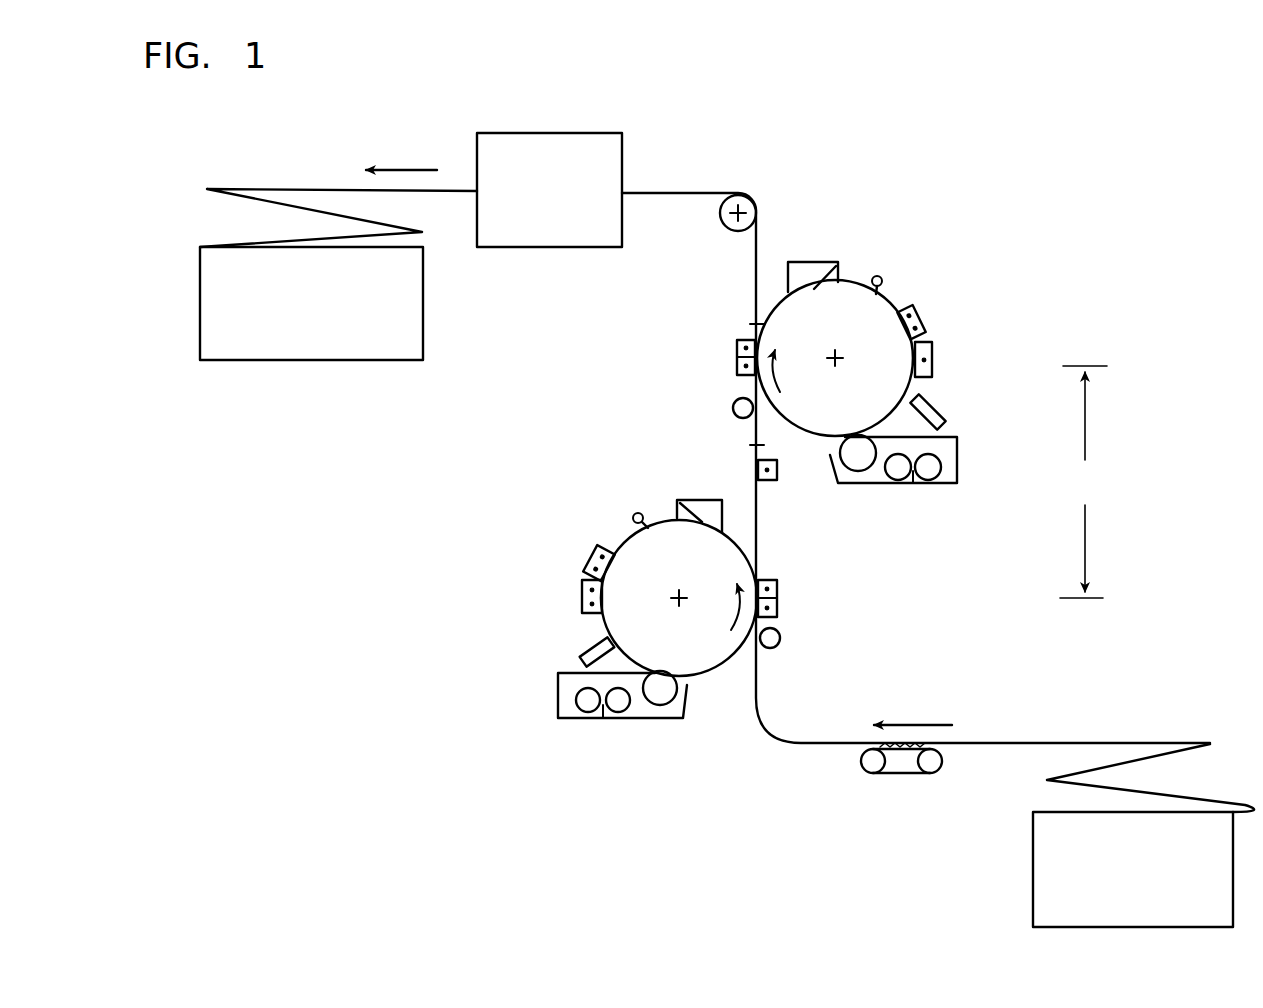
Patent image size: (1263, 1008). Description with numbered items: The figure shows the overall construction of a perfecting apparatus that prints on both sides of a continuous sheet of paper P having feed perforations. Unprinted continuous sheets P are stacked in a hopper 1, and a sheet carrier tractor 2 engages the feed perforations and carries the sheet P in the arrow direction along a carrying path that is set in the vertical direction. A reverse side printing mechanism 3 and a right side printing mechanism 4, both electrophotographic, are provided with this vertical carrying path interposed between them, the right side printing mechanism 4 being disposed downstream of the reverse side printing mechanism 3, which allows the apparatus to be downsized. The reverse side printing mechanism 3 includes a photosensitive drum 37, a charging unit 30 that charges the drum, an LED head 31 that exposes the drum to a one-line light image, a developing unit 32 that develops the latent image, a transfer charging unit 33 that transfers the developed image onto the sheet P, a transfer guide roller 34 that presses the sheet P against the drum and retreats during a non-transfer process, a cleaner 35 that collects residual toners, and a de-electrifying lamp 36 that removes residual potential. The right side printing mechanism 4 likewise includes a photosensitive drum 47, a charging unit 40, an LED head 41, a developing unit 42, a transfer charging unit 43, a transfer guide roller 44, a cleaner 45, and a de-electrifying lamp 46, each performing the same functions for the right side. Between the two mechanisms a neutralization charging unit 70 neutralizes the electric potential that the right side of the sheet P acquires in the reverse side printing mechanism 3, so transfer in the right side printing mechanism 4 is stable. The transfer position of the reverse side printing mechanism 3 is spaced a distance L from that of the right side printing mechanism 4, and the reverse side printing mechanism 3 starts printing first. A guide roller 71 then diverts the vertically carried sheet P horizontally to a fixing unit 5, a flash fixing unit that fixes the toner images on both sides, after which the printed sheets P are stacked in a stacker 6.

The hopper 1 is at (1033, 865).
The sheet carrier tractor 2 is at (900, 776).
The reverse side printing mechanism 3 is at (522, 660).
The right side printing mechanism 4 is at (955, 300).
The fixing unit 5 is at (545, 250).
The stacker 6 is at (310, 363).
The charging unit 30 is at (578, 577).
The LED head 31 is at (583, 652).
The developing unit 32 is at (620, 718).
The transfer charging unit 33 is at (780, 598).
The transfer guide roller 34 is at (782, 640).
The cleaner 35 is at (690, 495).
The de-electrifying lamp 36 is at (632, 510).
The photosensitive drum 37 is at (718, 652).
The charging unit 40 is at (936, 355).
The LED head 41 is at (946, 405).
The developing unit 42 is at (913, 483).
The transfer charging unit 43 is at (735, 356).
The transfer guide roller 44 is at (733, 408).
The cleaner 45 is at (812, 262).
The de-electrifying lamp 46 is at (880, 280).
The photosensitive drum 47 is at (850, 290).
The neutralization charging unit 70 is at (777, 480).
The guide roller 71 is at (725, 230).
The continuous sheet of paper P is at (1005, 743).
The distance L is at (1083, 482).